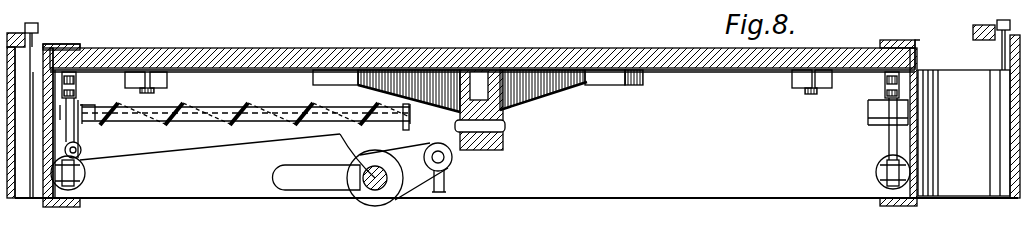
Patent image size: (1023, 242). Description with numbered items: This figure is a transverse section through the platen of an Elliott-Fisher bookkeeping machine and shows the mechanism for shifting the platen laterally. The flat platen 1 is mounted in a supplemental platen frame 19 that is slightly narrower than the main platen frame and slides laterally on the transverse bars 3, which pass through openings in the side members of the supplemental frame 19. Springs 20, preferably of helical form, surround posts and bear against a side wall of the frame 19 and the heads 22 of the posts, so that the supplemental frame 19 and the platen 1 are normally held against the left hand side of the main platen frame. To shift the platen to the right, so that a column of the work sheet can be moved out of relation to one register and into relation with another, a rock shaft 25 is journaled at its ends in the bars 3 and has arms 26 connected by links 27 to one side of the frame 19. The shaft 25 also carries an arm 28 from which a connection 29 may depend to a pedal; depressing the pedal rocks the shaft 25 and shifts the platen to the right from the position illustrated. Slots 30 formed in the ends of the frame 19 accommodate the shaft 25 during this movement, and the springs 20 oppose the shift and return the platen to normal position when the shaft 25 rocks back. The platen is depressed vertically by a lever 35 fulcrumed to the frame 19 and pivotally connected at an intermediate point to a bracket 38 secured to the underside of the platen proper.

The flat platen 1 is at (288, 48).
The transverse members 3 is at (952, 70).
The supplemental platen frame 19 is at (605, 195).
The springs 20 is at (178, 110).
The heads of posts 22 is at (411, 123).
The rock shaft 25 is at (372, 190).
The arms 26 is at (336, 150).
The links 27 is at (185, 148).
The arm 28 is at (412, 178).
The connection 29 is at (450, 192).
The slots 30 is at (293, 185).
The lever 35 is at (490, 135).
The bracket 38 is at (515, 118).